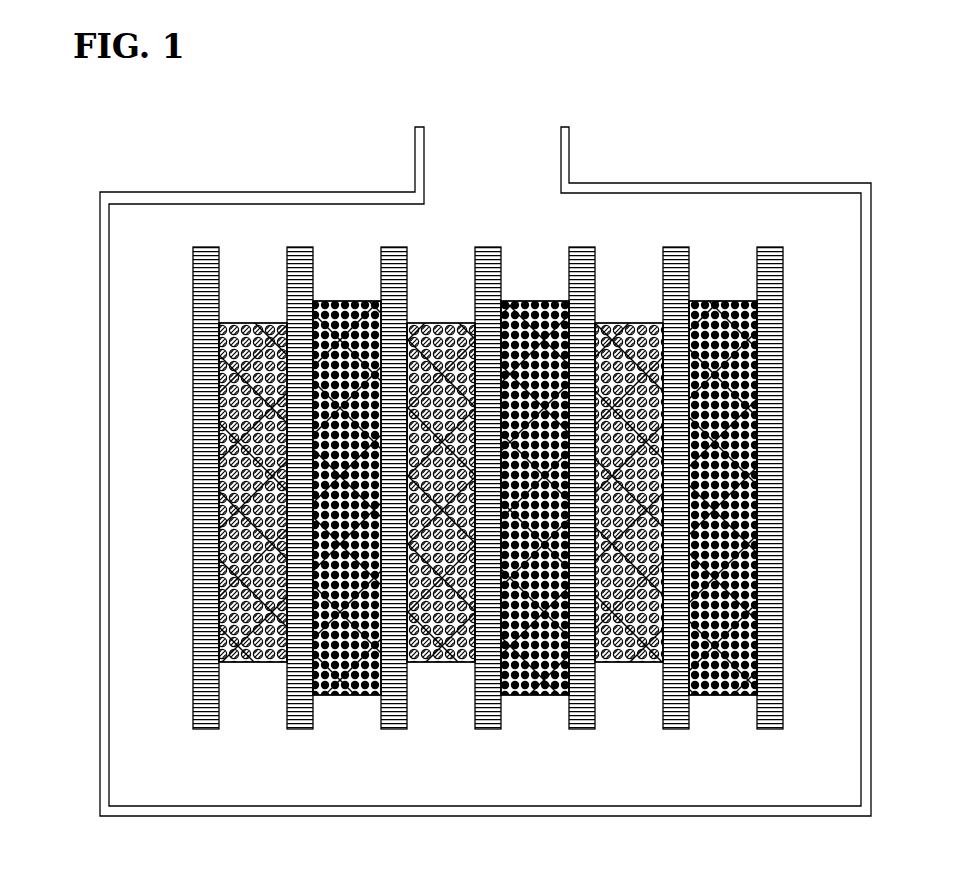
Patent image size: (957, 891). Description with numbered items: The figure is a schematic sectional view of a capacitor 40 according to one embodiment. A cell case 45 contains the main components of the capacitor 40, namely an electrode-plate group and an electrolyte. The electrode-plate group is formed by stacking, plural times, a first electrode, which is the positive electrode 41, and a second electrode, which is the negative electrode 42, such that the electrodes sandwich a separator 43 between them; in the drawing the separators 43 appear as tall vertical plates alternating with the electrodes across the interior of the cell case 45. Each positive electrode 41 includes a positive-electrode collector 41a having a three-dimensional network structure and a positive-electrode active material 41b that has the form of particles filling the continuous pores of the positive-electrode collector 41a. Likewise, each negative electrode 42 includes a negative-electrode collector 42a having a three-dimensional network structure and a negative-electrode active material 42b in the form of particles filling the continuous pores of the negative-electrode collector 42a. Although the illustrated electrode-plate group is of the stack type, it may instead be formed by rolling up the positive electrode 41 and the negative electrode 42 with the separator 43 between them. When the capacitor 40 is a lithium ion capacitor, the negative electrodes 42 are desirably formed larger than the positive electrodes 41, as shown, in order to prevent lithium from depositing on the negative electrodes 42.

The capacitor 40 is at (178, 164).
The first electrode (positive electrode) 41 is at (630, 663).
The positive-electrode collector 41a is at (413, 663).
The positive-electrode active material 41b is at (435, 663).
The second electrode (negative electrode) 42 is at (722, 697).
The negative-electrode collector 42a is at (323, 696).
The negative-electrode active material 42b is at (353, 696).
The separator 43 is at (580, 718).
The cell case 45 is at (100, 507).